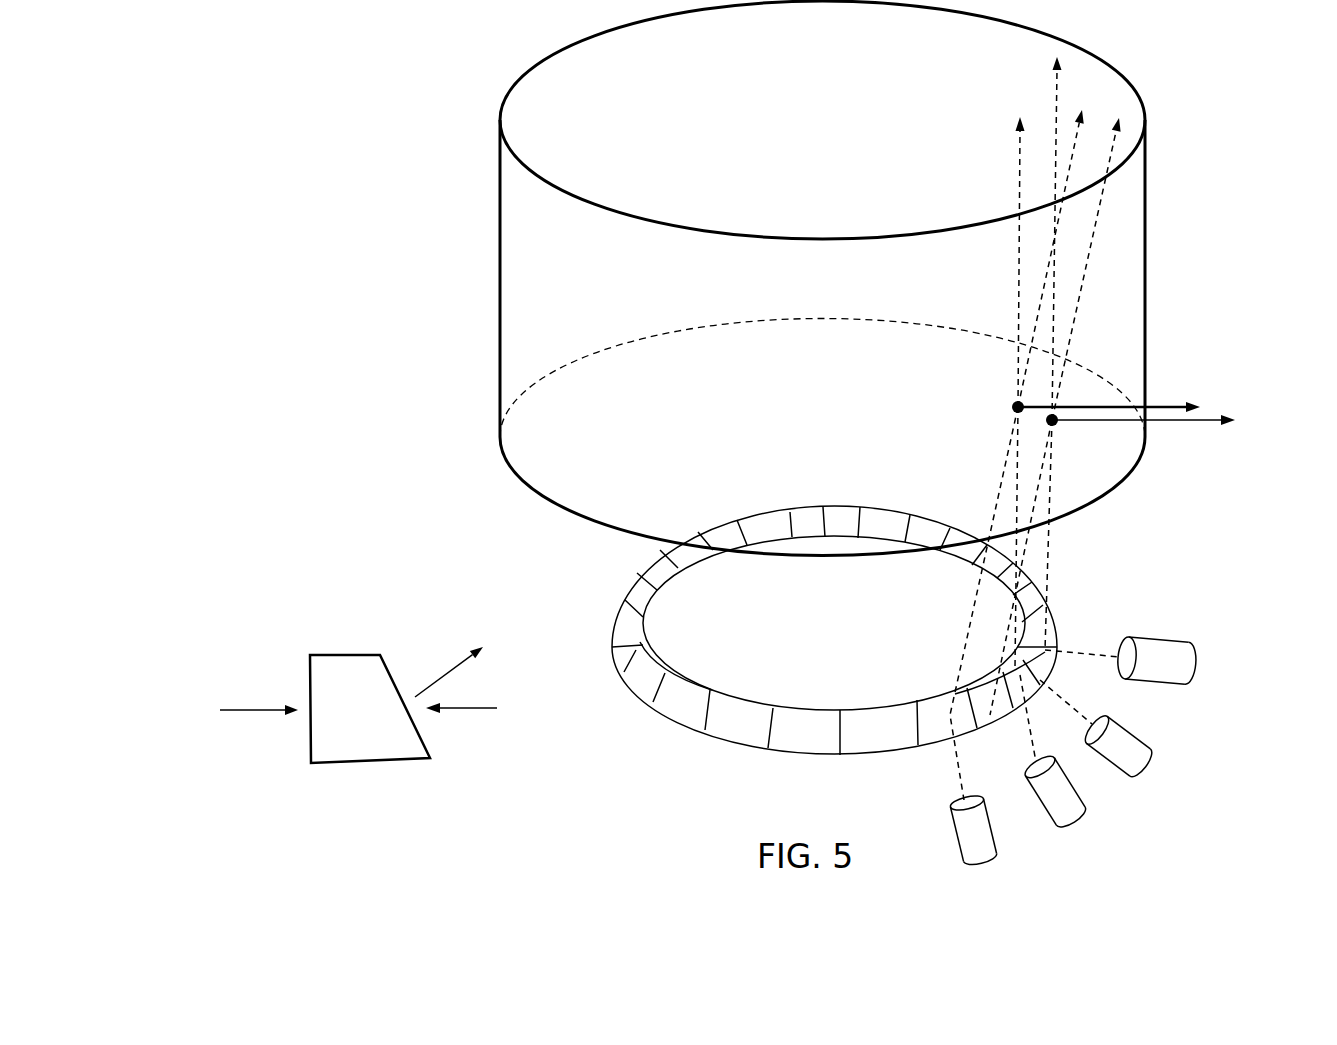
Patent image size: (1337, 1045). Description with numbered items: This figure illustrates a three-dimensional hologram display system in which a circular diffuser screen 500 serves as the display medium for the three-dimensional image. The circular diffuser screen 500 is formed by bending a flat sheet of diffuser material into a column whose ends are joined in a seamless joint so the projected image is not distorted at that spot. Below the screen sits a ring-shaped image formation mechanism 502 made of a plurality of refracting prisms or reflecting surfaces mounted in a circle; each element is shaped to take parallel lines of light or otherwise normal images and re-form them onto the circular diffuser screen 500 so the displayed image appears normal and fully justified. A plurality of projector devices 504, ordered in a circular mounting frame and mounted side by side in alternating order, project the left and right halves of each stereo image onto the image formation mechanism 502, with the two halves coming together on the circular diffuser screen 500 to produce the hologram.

The circular diffuser screen 500 is at (500, 322).
The image formation mechanism 502 is at (368, 758).
The projector device 504 is at (1138, 733).